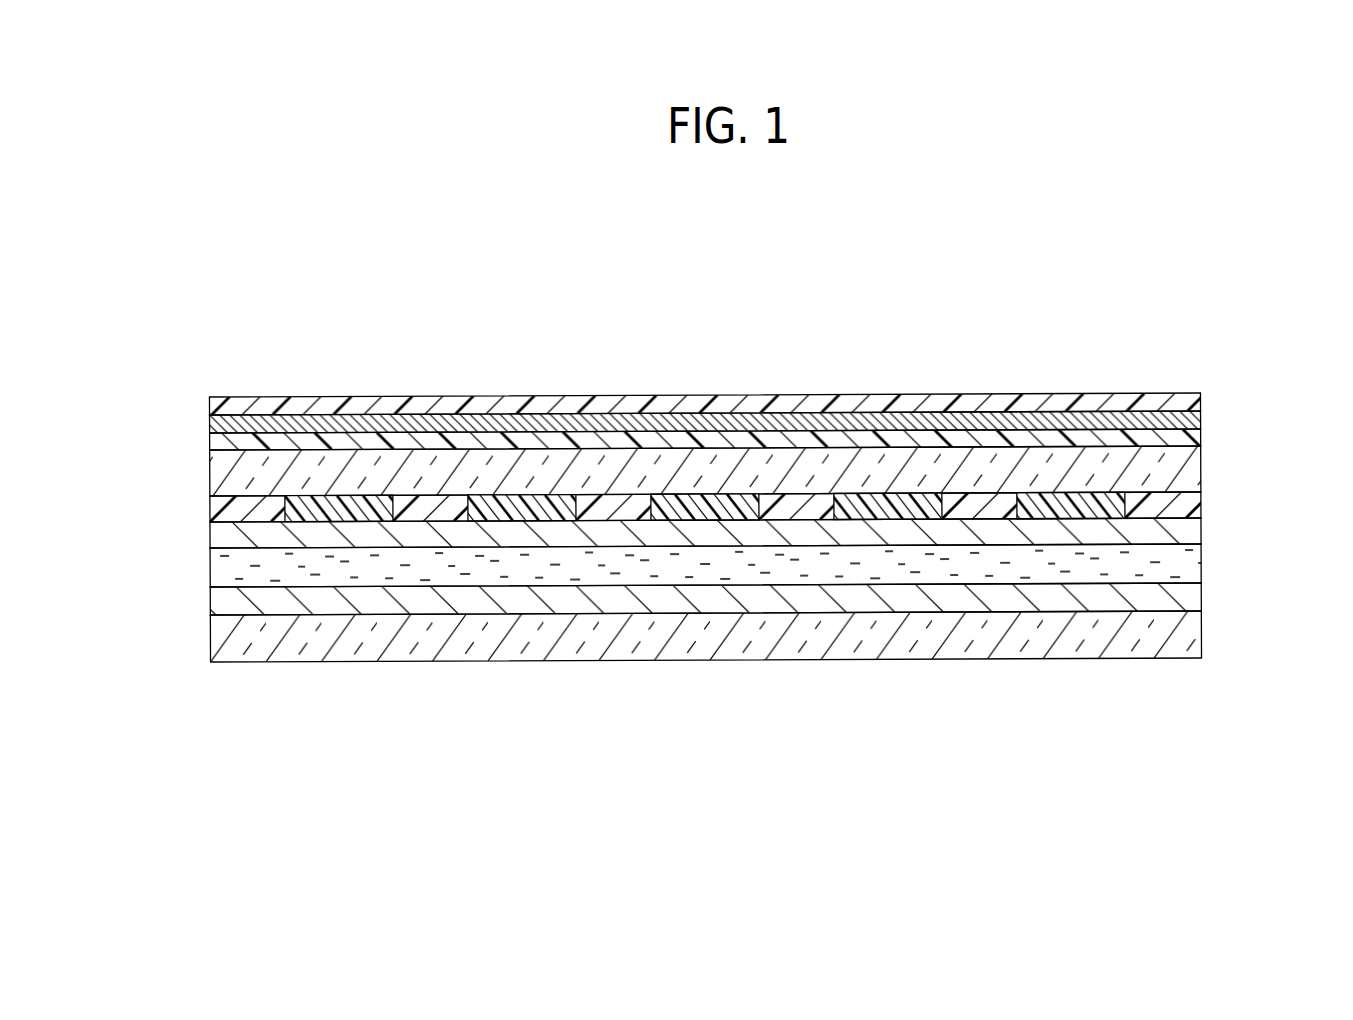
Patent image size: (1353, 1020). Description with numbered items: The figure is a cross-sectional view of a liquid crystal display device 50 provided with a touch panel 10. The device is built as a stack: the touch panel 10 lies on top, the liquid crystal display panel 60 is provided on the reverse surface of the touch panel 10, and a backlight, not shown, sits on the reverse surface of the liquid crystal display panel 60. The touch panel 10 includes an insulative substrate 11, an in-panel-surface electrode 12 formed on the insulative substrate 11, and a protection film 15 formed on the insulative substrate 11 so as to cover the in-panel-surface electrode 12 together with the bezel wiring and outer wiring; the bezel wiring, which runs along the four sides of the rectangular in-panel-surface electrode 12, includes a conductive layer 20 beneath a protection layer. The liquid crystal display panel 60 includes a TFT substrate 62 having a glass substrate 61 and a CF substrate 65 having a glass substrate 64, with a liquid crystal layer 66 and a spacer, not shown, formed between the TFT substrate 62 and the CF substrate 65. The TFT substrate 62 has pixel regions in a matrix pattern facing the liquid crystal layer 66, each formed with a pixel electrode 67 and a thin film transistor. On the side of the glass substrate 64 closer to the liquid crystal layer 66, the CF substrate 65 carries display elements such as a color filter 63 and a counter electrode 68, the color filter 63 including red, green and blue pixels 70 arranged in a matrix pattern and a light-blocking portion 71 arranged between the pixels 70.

The liquid crystal display device 50 is at (697, 327).
The touch panel 10 is at (200, 398).
The protection film 15 is at (1202, 400).
The conductive layer 20 is at (773, 404).
The in-panel-surface electrode 12 is at (1202, 420).
The insulative substrate 11 is at (1202, 438).
The liquid crystal display panel 60 is at (148, 452).
The CF substrate 65 is at (200, 452).
The glass substrate 64 is at (1202, 468).
The color filter 63 is at (1201, 505).
The counter electrode 68 is at (1202, 530).
The liquid crystal layer 66 is at (1202, 570).
The TFT substrate 62 is at (200, 590).
The pixel electrode 67 is at (1202, 598).
The glass substrate 61 is at (1202, 637).
The pixels 70 is at (522, 508).
The light-blocking portion 71 is at (787, 508).